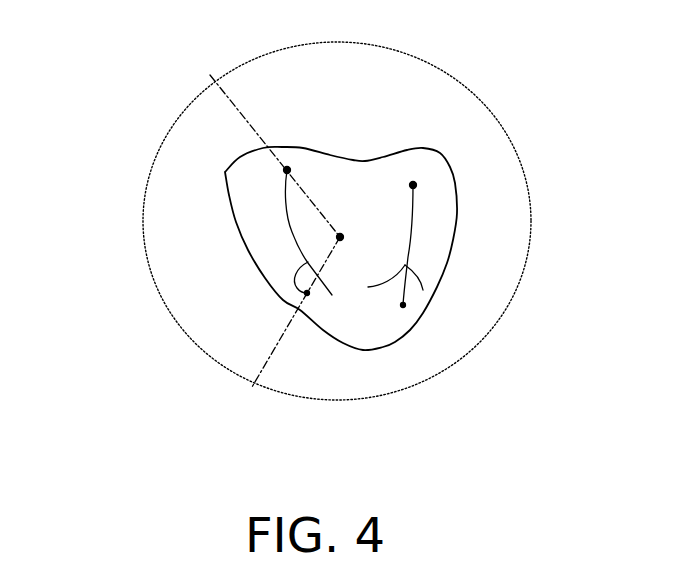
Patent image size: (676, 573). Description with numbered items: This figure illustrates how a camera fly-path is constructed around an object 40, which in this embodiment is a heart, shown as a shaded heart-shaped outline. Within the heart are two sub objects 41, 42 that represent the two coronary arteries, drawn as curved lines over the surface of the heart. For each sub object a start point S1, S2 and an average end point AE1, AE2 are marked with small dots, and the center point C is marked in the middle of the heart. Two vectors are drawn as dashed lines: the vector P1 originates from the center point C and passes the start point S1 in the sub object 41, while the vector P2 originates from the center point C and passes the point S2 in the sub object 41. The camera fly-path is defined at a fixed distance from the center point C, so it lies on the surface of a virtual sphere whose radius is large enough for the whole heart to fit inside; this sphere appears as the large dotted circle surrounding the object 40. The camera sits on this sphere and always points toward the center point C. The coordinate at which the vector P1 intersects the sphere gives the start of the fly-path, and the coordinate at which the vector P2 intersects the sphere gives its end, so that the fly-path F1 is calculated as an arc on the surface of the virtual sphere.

The object 40 is at (240, 236).
The sub object 41 is at (412, 228).
The sub object 42 is at (285, 213).
The fly-path F1 is at (143, 207).
The vector P1 is at (211, 77).
The vector P2 is at (252, 386).
The start point S1 is at (287, 170).
The start point S2 is at (413, 185).
The center point C is at (340, 237).
The average end point AE1 is at (305, 293).
The average end point AE2 is at (403, 305).